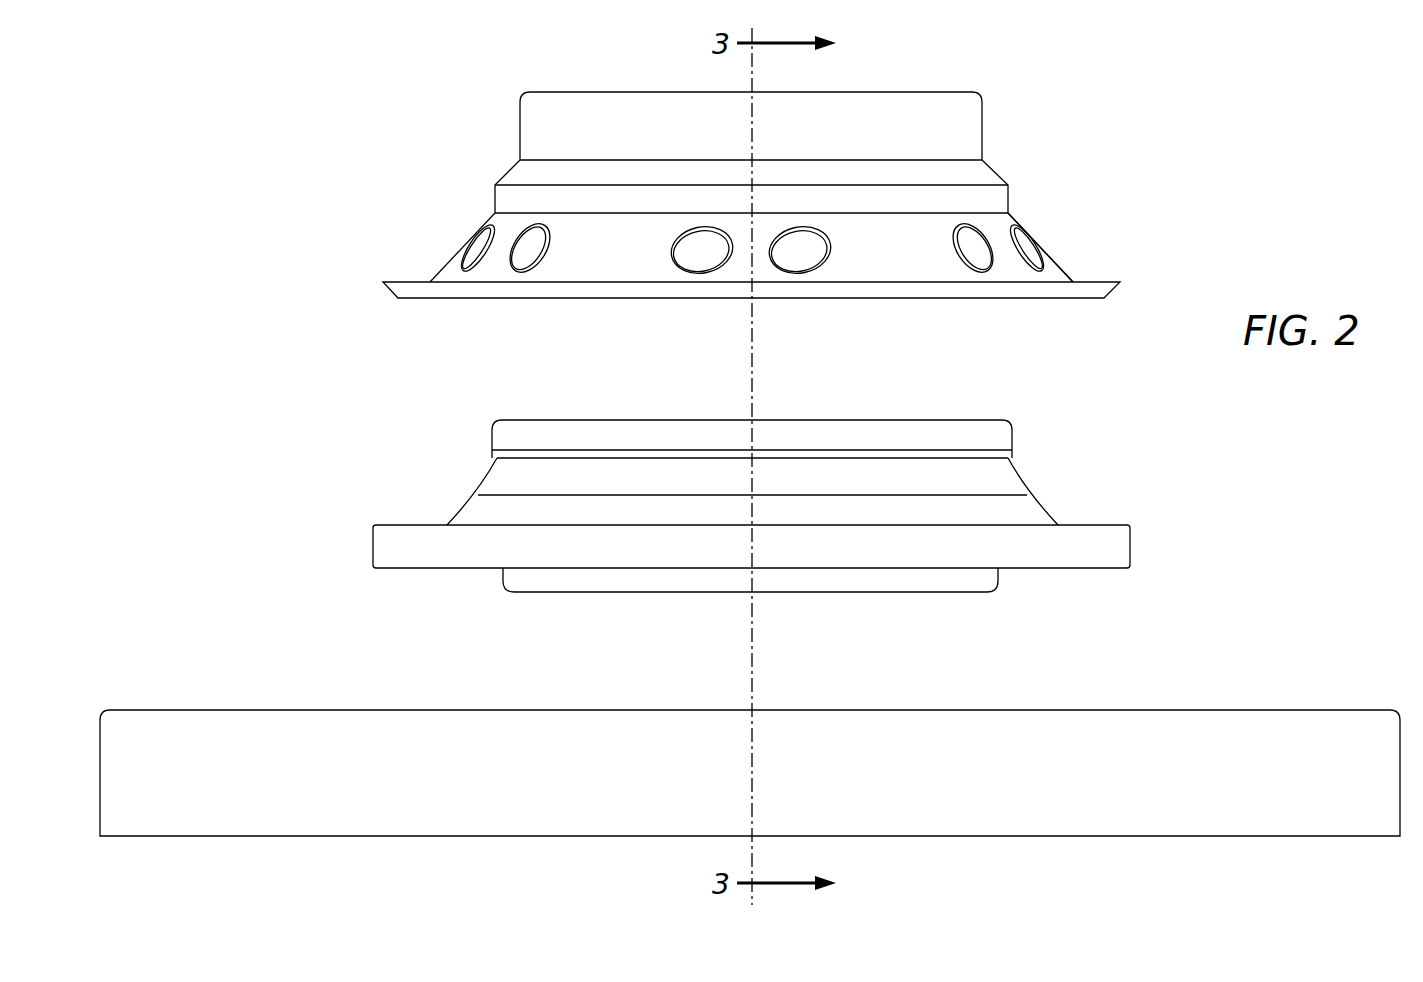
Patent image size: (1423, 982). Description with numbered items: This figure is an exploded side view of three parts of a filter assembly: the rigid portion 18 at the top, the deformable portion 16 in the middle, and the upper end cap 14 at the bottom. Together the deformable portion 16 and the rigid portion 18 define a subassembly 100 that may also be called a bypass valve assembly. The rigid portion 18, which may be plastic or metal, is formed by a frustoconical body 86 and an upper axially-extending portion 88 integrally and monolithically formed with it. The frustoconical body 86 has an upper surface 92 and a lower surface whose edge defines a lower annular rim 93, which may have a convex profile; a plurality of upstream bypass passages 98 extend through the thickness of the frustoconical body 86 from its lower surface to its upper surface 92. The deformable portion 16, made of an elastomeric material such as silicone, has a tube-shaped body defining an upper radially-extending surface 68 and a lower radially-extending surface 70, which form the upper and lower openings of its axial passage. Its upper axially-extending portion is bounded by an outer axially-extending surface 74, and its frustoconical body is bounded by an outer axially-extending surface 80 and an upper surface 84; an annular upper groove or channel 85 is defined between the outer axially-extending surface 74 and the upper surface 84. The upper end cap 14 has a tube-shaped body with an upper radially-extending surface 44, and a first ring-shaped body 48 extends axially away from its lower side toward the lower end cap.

The subassembly 100 is at (172, 165).
The rigid portion 18 is at (433, 135).
The deformable portion 16 is at (404, 482).
The upper end cap 14 is at (108, 674).
The upper radially-extending surface 44 is at (268, 710).
The first ring-shaped body 48 is at (110, 737).
The upper axially-extending portion 88 is at (1004, 122).
The upper surface 92 is at (872, 257).
The frustoconical body 86 is at (1069, 262).
The lower annular rim 93 is at (403, 300).
The upstream bypass passages 98 is at (790, 243).
The upper radially-extending surface 68 is at (557, 420).
The outer axially-extending surface 74 is at (1003, 433).
The upper groove or channel 85 is at (497, 455).
The upper surface 84 is at (1023, 508).
The outer axially-extending surface 80 is at (1117, 542).
The lower radially-extending surface 70 is at (552, 592).